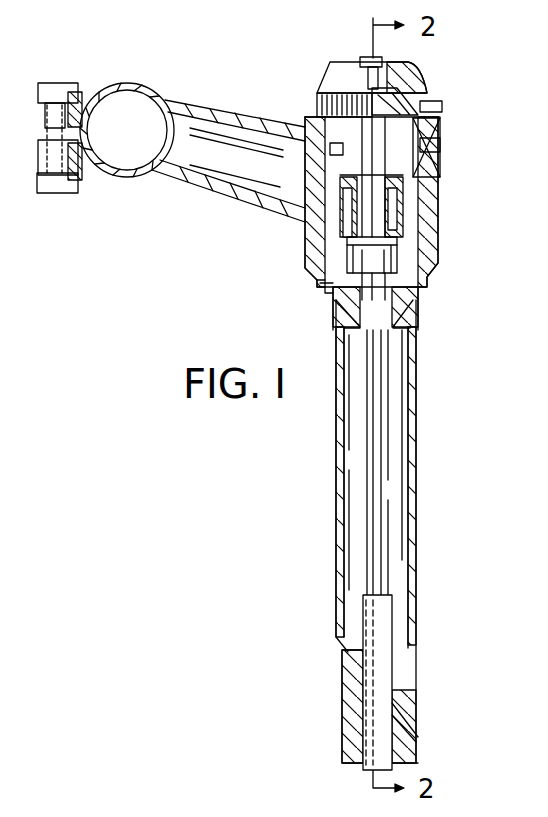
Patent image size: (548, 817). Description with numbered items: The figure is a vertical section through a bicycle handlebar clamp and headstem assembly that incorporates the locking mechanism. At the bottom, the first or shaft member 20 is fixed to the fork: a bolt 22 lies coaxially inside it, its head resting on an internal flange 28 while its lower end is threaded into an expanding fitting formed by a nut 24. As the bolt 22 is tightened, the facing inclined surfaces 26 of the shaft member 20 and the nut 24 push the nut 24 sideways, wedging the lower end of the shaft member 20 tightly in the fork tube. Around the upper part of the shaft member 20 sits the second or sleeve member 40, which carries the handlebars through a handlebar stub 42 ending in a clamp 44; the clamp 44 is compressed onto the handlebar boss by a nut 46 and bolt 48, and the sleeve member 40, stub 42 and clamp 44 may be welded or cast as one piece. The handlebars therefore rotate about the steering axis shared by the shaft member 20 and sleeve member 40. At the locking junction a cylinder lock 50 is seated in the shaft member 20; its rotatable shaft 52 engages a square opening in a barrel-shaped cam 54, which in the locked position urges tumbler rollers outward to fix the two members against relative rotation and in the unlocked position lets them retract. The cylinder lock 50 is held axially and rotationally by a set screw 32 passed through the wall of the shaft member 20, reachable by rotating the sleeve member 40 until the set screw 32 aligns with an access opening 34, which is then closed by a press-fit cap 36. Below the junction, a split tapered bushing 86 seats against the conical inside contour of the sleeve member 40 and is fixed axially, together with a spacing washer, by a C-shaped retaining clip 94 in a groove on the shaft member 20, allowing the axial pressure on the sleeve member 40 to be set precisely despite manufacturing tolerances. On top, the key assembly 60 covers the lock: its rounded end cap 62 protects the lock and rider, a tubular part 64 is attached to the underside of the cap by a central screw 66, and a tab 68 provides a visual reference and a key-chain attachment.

The shaft member 20 is at (416, 542).
The bolt 22 is at (363, 675).
The nut 24 is at (401, 708).
The inclined surfaces 26 is at (380, 648).
The internal flange 28 is at (412, 306).
The set screw 32 is at (348, 150).
The access opening 34 is at (440, 130).
The press-fit cap 36 is at (442, 147).
The sleeve member 40 is at (428, 222).
The handlebar stub 42 is at (205, 190).
The clamp 44 is at (145, 108).
The nut 46 is at (62, 95).
The bolt 48 is at (78, 183).
The cylinder lock 50 is at (305, 128).
The rotatable shaft 52 is at (378, 201).
The cam 54 is at (400, 240).
The key assembly 60 is at (333, 75).
The rounded end cap 62 is at (413, 76).
The tubular part 64 is at (418, 90).
The central screw 66 is at (364, 56).
The tab 68 is at (445, 107).
The split tapered bushing 86 is at (320, 283).
The retaining clip 94 is at (324, 290).